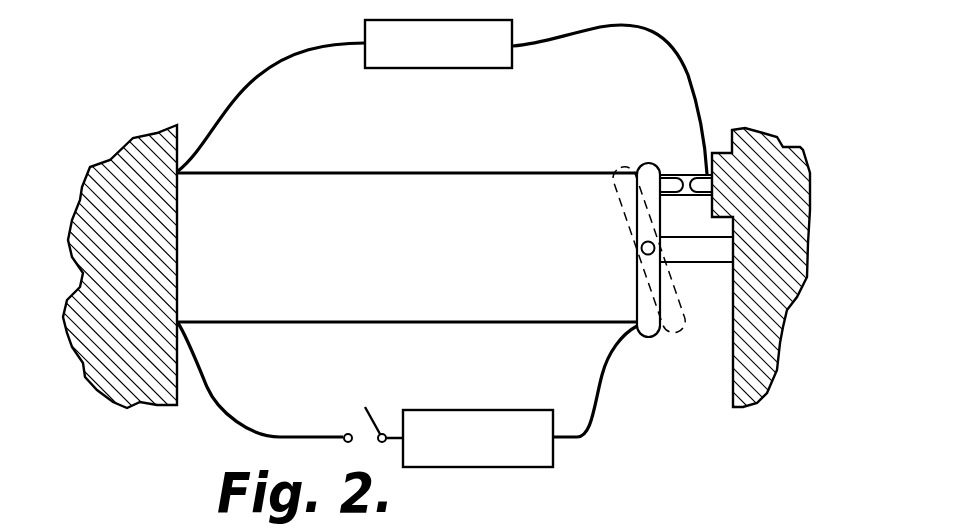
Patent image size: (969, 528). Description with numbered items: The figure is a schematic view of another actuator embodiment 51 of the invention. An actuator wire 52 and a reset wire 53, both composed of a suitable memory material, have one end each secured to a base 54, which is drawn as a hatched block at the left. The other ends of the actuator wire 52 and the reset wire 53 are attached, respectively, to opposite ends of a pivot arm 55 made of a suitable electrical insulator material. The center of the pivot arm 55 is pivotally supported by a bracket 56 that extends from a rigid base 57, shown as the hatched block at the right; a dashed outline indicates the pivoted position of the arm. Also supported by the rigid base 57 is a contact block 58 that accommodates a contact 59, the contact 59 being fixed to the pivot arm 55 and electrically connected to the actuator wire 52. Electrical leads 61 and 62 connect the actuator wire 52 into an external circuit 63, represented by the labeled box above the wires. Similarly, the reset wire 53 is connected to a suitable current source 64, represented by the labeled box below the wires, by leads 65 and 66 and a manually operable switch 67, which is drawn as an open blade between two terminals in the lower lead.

The actuator embodiment 51 is at (730, 91).
The actuator wire 52 is at (365, 174).
The reset wire 53 is at (405, 322).
The base 54 is at (70, 363).
The pivot arm 55 is at (638, 163).
The bracket 56 is at (700, 263).
The rigid base 57 is at (788, 307).
The contact block 58 is at (698, 175).
The contact 59 is at (678, 176).
The electrical lead 61 is at (275, 68).
The electrical lead 62 is at (555, 44).
The external circuit 63 is at (402, 68).
The current source 64 is at (460, 410).
The lead 65 is at (602, 368).
The lead 66 is at (242, 422).
The manually operable switch 67 is at (368, 407).